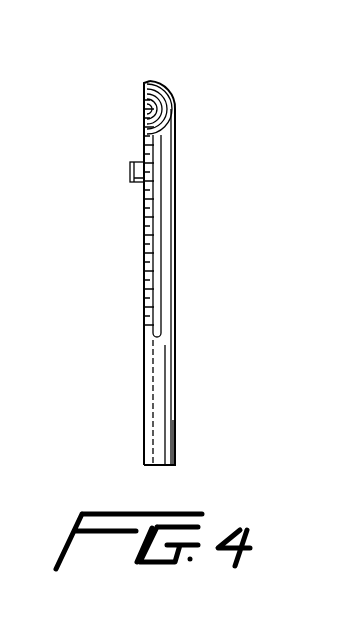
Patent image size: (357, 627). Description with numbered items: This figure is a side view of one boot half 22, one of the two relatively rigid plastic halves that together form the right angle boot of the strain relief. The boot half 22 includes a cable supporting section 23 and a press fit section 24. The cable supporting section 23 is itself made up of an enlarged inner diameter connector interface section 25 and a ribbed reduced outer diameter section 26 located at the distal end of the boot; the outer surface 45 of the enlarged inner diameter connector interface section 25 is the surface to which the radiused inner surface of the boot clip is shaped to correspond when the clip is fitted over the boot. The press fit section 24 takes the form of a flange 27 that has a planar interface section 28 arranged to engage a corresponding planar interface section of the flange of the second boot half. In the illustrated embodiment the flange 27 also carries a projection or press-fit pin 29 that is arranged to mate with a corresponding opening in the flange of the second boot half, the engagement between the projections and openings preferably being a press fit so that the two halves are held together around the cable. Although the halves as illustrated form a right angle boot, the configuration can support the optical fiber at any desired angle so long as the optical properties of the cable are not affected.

The boot half 22 is at (153, 398).
The cable supporting section 23 is at (165, 350).
The press fit section 24 is at (150, 265).
The enlarged inner diameter connector interface section 25 is at (175, 440).
The ribbed reduced outer diameter section 26 is at (175, 103).
The flange 27 is at (153, 233).
The planar interface section 28 is at (145, 215).
The press-fit pin 29 is at (131, 167).
The outer surface 45 is at (160, 85).